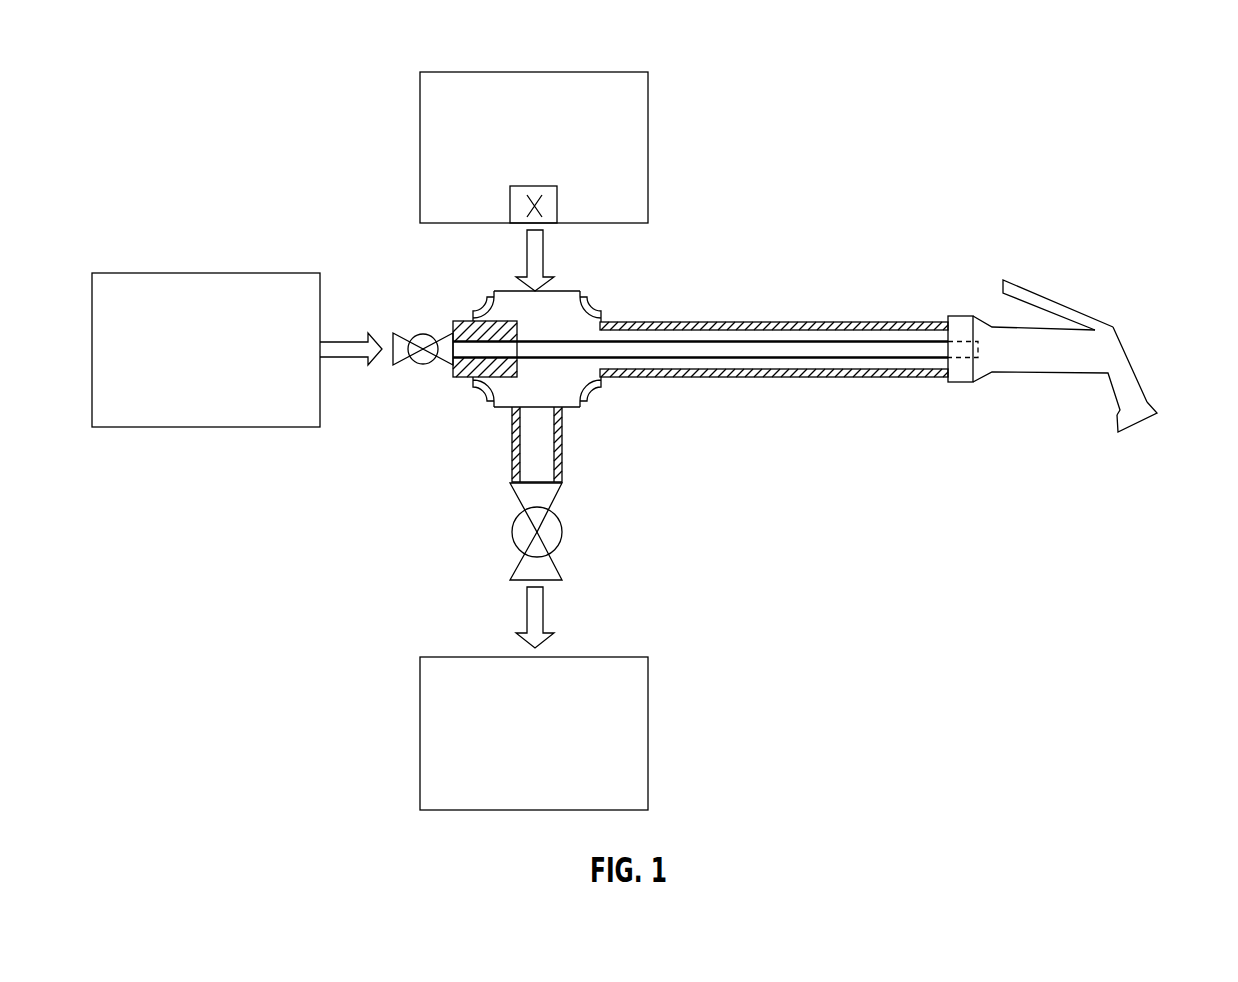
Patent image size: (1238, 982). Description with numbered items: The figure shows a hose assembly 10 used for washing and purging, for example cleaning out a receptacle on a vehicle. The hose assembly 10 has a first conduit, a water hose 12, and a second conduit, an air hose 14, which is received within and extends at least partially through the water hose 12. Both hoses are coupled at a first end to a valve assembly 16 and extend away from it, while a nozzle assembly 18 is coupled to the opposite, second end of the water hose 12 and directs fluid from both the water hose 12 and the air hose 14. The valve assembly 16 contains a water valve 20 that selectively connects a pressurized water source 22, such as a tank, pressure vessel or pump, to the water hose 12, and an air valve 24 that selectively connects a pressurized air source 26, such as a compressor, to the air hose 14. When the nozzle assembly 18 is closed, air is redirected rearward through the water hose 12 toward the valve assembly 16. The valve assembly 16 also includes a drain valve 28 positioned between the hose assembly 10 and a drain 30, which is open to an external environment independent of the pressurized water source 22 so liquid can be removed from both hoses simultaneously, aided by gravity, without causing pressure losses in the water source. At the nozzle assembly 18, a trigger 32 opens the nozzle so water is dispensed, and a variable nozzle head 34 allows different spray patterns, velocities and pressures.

The hose assembly 10 is at (995, 76).
The water hose 12 is at (793, 322).
The air hose 14 is at (817, 350).
The valve assembly 16 is at (462, 408).
The nozzle assembly 18 is at (1142, 307).
The water valve 20 is at (558, 205).
The pressurized water source 22 is at (597, 71).
The air valve 24 is at (423, 334).
The pressurized air source 26 is at (268, 272).
The drain valve 28 is at (510, 532).
The drain 30 is at (597, 656).
The trigger 32 is at (1052, 296).
The variable nozzle head 34 is at (1158, 413).